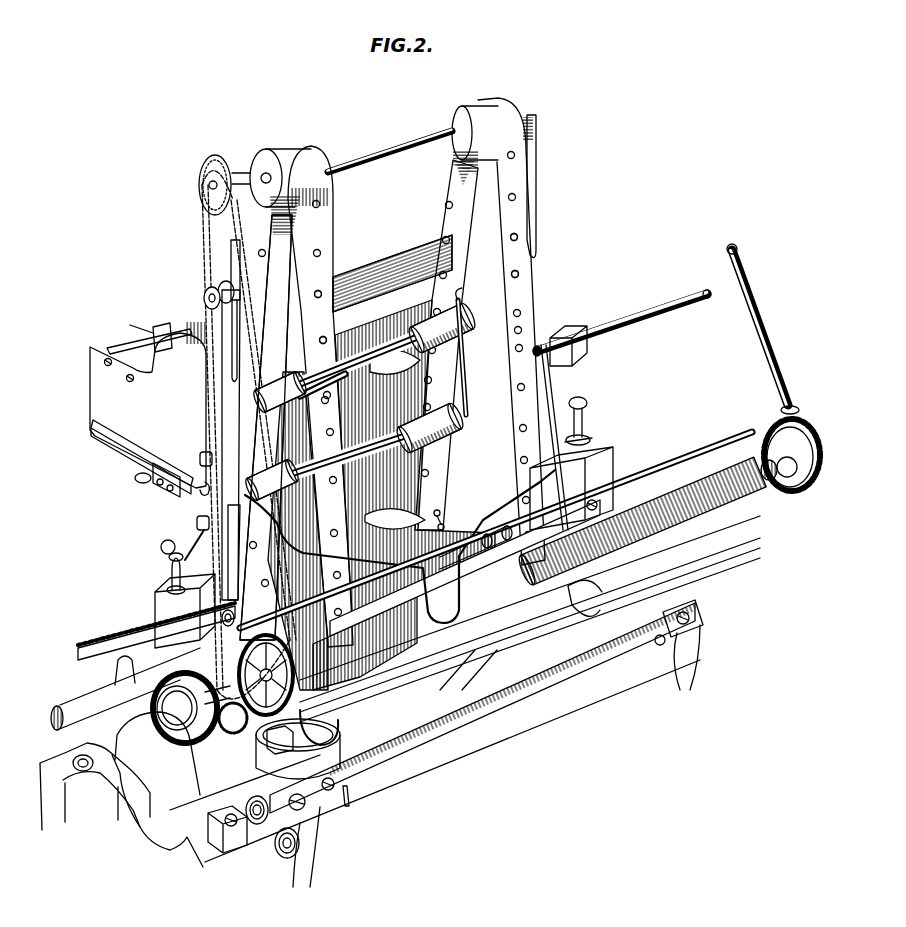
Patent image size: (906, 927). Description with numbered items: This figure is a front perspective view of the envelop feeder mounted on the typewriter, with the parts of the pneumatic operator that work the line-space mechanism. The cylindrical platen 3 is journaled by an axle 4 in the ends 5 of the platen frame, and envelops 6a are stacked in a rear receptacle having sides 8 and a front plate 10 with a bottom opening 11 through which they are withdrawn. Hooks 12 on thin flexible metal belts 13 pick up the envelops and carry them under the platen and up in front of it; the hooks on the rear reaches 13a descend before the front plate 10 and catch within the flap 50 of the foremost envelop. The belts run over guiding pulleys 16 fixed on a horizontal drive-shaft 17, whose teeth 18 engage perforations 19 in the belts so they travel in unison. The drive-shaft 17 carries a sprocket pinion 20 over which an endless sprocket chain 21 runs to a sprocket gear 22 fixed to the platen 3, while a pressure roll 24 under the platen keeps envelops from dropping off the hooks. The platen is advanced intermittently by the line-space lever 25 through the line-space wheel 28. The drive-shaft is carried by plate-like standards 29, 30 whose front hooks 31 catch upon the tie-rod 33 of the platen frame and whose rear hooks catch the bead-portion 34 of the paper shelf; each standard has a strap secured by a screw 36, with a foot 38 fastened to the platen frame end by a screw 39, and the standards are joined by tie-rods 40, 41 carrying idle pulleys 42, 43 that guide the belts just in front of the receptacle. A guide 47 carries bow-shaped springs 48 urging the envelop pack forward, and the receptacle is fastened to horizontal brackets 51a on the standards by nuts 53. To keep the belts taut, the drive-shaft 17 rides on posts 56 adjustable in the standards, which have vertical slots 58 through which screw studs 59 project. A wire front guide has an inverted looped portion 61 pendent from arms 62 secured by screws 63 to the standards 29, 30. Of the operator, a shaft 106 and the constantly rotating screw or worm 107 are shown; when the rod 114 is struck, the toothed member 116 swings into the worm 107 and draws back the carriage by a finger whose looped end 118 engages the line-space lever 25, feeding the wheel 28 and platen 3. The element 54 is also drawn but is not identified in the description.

The cylindrical platen 3 is at (456, 495).
The axle 4 is at (187, 711).
The platen frame ends 5 is at (605, 465).
The envelops 6a is at (392, 425).
The receptacle sides 8 is at (148, 410).
The front plate 10 is at (268, 427).
The opening 11 is at (336, 361).
The hooks 12 is at (527, 195).
The belts 13 is at (424, 360).
The rear reaches 13a is at (359, 400).
The guiding pulleys 16 is at (322, 160).
The drive-shaft 17 is at (387, 143).
The teeth 18 is at (283, 150).
The perforations 19 is at (326, 338).
The sprocket pinion 20 is at (205, 186).
The endless sprocket chain 21 is at (203, 232).
The sprocket gear 22 is at (175, 512).
The pressure roll 24 is at (590, 590).
The line-space lever 25 is at (370, 727).
The line-space wheel 28 is at (256, 697).
The standard 29 is at (231, 445).
The standard 30 is at (465, 385).
The front hooks 31 is at (229, 612).
The tie-rod 33 is at (446, 520).
The bead-portion 34 is at (161, 546).
The screw 36 is at (200, 458).
The foot 38 is at (170, 584).
The screw 39 is at (170, 558).
The tie-rod 40 is at (372, 355).
The tie-rod 41 is at (331, 461).
The idle pulley 42 is at (425, 325).
The idle pulley 43 is at (455, 420).
The guide 47 is at (125, 345).
The bow-shaped springs 48 is at (163, 325).
The flap 50 is at (395, 439).
The horizontal brackets 51a is at (128, 444).
The nuts 53 is at (135, 478).
The fabric band 54 is at (352, 290).
The posts 56 is at (538, 152).
The vertical slots 58 is at (236, 350).
The screw studs 59 is at (205, 296).
The inverted looped portion 61 is at (430, 603).
The arms 62 is at (231, 552).
The screws 63 is at (203, 490).
The shaft 106 is at (770, 345).
The screw or worm 107 is at (760, 498).
The rod 114 is at (650, 328).
The toothed member 116 is at (560, 396).
The looped end 118 is at (345, 800).